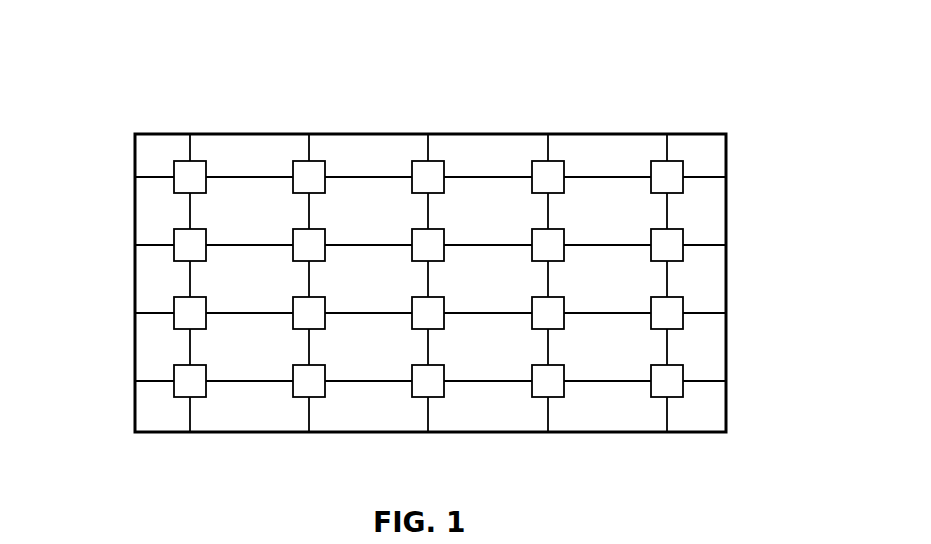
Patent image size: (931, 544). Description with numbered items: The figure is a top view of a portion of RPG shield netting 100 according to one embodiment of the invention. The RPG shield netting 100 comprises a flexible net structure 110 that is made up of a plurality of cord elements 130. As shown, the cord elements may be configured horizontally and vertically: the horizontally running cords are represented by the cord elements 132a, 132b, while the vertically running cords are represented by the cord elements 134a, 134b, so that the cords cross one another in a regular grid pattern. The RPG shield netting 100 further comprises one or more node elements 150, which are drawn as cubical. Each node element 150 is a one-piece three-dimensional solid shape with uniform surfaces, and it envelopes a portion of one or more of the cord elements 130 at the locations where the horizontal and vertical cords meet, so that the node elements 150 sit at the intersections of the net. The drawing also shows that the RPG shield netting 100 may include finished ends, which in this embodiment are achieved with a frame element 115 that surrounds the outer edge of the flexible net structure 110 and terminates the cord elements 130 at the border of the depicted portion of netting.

The RPG shield netting 100 is at (171, 68).
The flexible net structure 110 is at (597, 175).
The frame element 115 is at (726, 350).
The cord elements 130 is at (668, 217).
The horizontal cord element 132a is at (257, 182).
The horizontal cord element 132b is at (242, 246).
The vertical cord element 134a is at (187, 340).
The vertical cord element 134b is at (308, 341).
The node element 150 is at (429, 177).